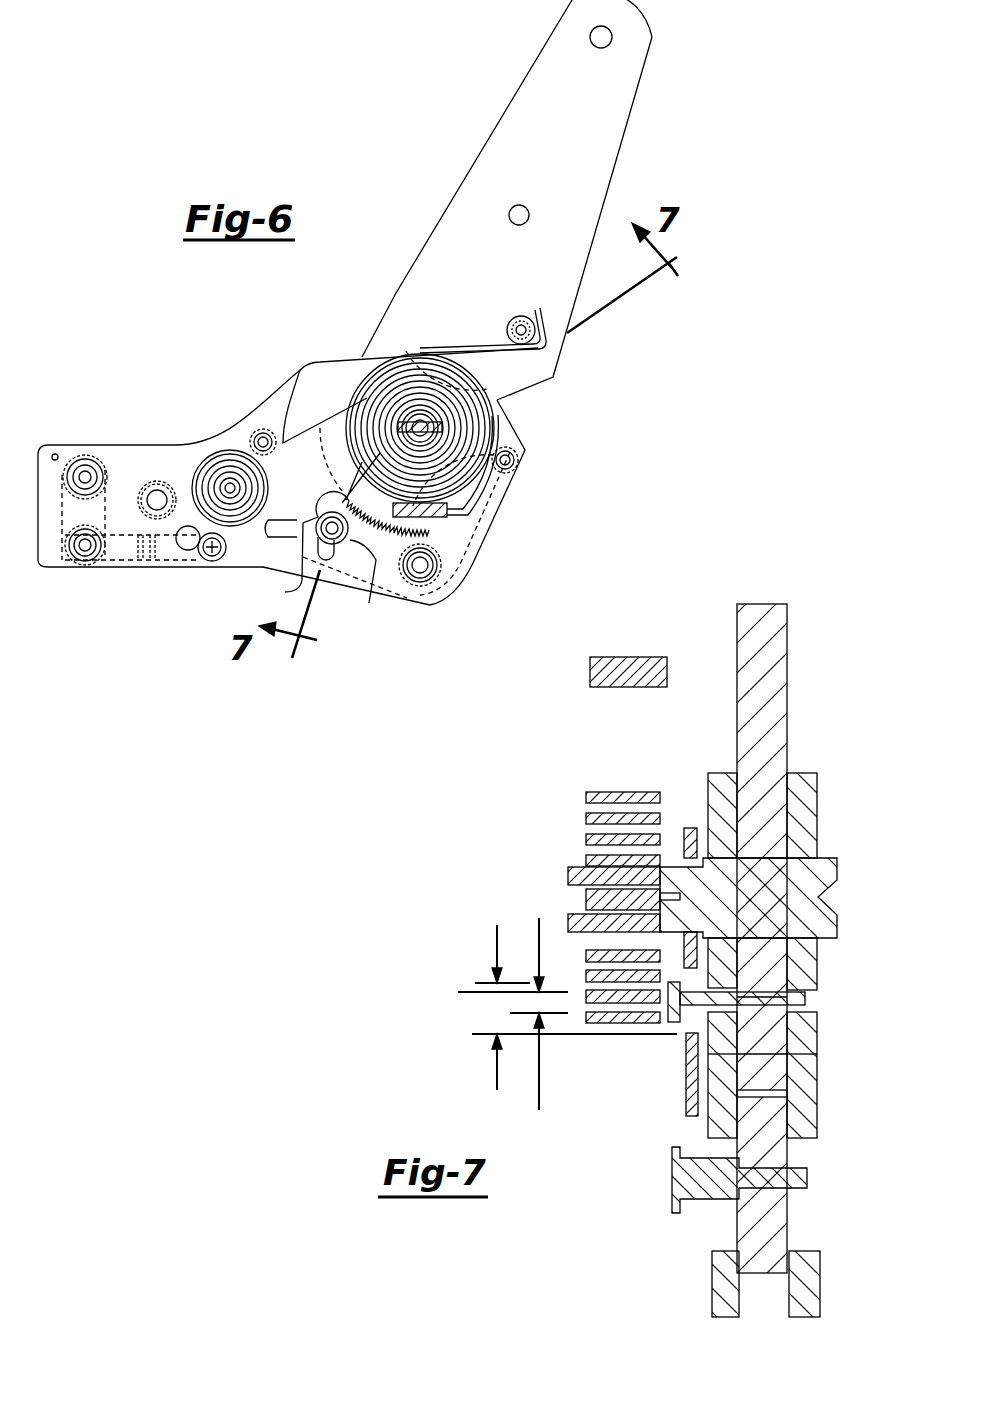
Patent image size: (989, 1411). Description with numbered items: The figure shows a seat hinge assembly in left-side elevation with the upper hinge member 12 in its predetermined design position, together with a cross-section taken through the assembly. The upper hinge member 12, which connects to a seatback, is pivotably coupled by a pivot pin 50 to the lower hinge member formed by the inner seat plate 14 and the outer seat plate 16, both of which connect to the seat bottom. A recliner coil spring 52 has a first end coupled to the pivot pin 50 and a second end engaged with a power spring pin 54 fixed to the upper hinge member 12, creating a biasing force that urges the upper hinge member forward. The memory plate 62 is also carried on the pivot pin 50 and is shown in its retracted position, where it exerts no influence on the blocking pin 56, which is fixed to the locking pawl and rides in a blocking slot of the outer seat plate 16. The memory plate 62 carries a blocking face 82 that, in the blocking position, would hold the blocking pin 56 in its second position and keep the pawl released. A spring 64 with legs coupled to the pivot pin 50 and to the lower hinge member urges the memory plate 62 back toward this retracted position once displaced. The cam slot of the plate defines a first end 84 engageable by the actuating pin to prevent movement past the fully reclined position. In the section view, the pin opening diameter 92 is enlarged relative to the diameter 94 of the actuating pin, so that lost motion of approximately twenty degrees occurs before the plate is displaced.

In FIG. 6, the upper hinge member 12 is at (590, 133).
In FIG. 7, the upper hinge member 12 is at (760, 622).
In FIG. 7, the inner seat plate 14 is at (708, 802).
In FIG. 6, the outer seat plate 16 is at (475, 540).
In FIG. 7, the outer seat plate 16 is at (817, 802).
In FIG. 7, the pivot pin 50 is at (837, 897).
In FIG. 6, the recliner coil spring 52 is at (498, 420).
In FIG. 7, the power spring pin 54 is at (618, 657).
In FIG. 6, the blocking pin 56 is at (376, 562).
In FIG. 7, the blocking pin 56 is at (672, 1188).
In FIG. 6, the memory plate 62 is at (305, 445).
In FIG. 7, the memory plate 62 is at (686, 1075).
In FIG. 6, the spring 64 is at (486, 490).
In FIG. 6, the blocking face 82 is at (262, 435).
In FIG. 6, the first end 84 is at (285, 592).
In FIG. 7, the pin opening diameter 92 is at (497, 945).
In FIG. 7, the diameter 94 is at (539, 1068).